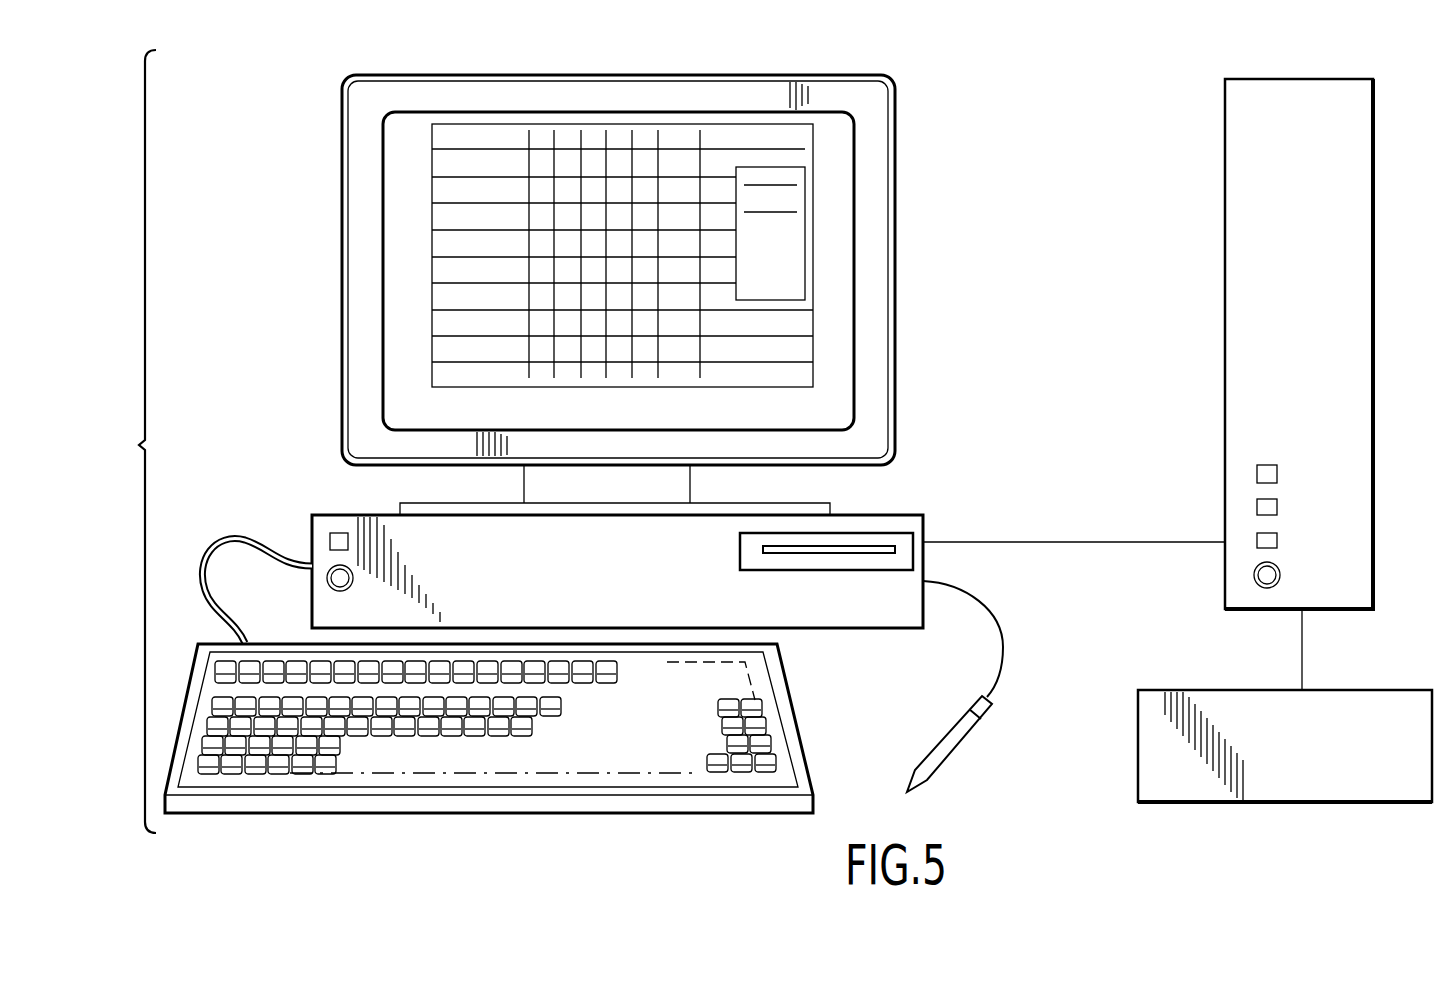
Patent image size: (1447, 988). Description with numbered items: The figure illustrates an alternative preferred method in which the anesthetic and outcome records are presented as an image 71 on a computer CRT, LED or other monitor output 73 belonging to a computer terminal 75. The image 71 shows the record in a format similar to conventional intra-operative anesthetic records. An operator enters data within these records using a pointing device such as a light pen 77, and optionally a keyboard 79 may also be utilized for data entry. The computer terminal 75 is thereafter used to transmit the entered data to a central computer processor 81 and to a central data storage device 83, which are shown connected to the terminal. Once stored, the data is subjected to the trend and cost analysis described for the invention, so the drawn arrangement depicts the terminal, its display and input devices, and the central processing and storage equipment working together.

The image 71 is at (432, 197).
The monitor output 73 is at (603, 270).
The computer terminal 75 is at (130, 441).
The light pen 77 is at (958, 720).
The keyboard 79 is at (785, 683).
The central computer processor 81 is at (1371, 298).
The central data storage device 83 is at (1353, 797).